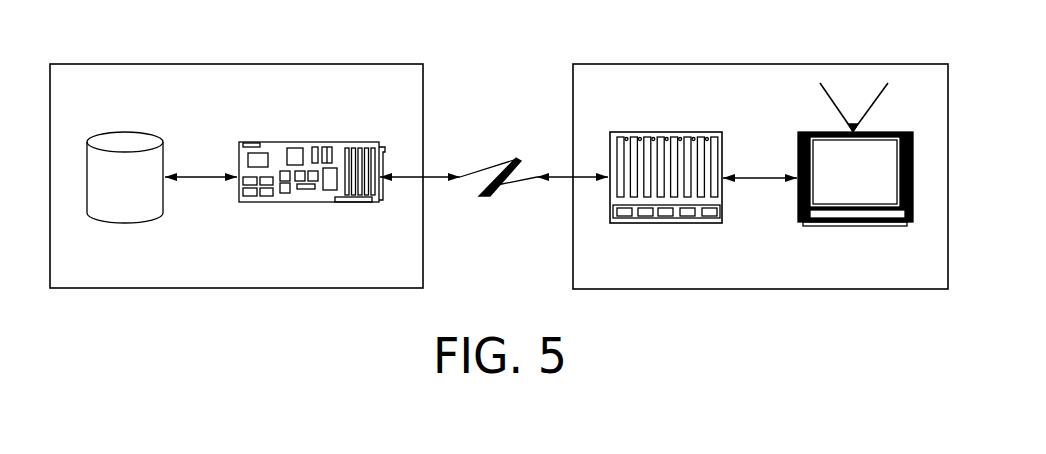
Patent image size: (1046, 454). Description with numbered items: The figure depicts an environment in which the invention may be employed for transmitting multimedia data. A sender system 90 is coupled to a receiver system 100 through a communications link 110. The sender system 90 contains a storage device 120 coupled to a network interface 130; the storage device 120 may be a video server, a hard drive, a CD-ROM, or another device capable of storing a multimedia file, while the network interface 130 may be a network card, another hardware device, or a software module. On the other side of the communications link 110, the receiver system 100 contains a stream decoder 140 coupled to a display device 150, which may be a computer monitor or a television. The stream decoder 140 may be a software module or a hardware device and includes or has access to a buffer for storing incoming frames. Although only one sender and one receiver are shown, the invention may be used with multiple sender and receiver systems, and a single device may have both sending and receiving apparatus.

The sender system 90 is at (235, 63).
The receiver system 100 is at (760, 63).
The communications link 110 is at (498, 160).
The storage device 120 is at (123, 223).
The network interface 130 is at (278, 202).
The stream decoder 140 is at (667, 223).
The display device 150 is at (853, 226).